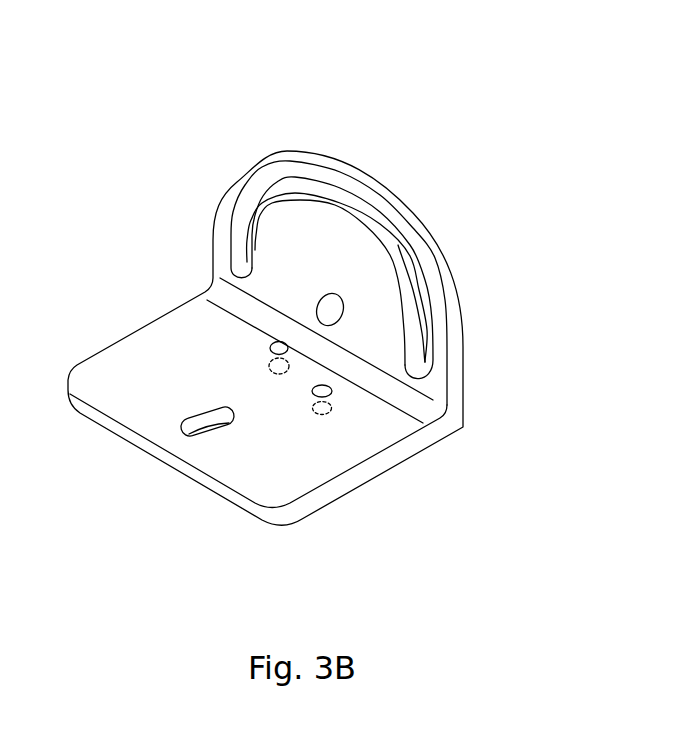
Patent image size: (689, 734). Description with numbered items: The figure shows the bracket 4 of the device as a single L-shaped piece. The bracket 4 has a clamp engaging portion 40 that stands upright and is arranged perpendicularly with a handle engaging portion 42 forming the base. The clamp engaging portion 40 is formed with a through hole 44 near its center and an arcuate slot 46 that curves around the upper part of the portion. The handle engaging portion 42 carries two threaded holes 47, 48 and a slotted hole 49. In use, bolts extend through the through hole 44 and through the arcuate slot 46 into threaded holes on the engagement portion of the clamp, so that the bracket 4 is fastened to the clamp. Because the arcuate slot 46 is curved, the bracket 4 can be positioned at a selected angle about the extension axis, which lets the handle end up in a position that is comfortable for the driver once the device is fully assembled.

The bracket 4 is at (481, 150).
The clamp engaging portion 40 is at (462, 354).
The handle engaging portion 42 is at (353, 489).
The through hole 44 is at (341, 297).
The arcuate slot 46 is at (290, 180).
The threaded hole 47 is at (270, 349).
The threaded hole 48 is at (332, 393).
The slotted hole 49 is at (182, 422).